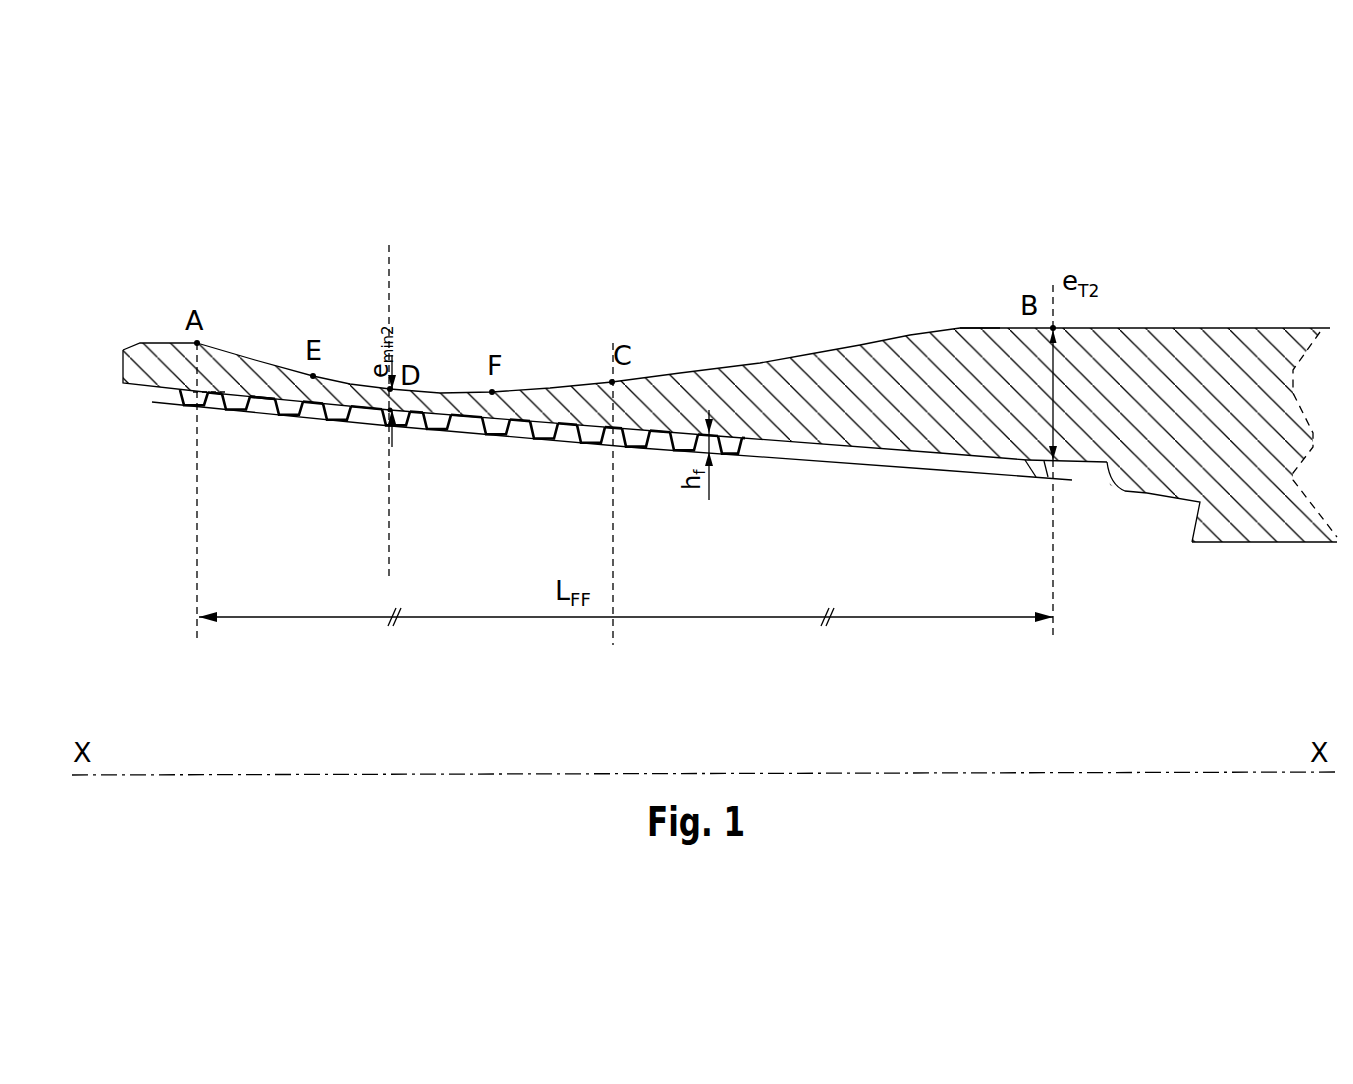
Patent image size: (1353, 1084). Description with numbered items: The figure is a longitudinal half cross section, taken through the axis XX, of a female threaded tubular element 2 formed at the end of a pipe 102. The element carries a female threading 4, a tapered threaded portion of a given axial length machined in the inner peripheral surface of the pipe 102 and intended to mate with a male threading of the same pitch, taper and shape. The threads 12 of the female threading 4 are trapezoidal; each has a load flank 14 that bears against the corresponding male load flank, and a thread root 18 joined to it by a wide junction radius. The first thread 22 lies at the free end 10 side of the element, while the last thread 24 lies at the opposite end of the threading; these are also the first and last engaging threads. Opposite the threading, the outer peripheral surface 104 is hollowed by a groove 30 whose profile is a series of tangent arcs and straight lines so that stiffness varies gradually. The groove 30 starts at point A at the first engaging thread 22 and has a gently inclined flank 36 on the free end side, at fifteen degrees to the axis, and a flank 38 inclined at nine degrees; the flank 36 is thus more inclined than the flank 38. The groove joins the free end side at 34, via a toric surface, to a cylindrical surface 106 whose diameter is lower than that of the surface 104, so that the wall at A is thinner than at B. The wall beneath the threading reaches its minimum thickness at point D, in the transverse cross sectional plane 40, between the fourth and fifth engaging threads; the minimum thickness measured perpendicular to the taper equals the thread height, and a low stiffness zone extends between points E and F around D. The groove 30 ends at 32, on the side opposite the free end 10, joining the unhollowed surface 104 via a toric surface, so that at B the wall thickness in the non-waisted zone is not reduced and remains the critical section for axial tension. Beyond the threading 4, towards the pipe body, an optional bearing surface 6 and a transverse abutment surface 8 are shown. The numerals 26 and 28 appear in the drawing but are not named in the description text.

The female threaded tubular element 2 is at (730, 376).
The female threading 4 is at (612, 491).
The bearing surface 6 is at (1108, 536).
The transverse abutment surface 8 is at (1162, 565).
The free end 10 is at (143, 333).
The threads 12 is at (580, 491).
The load flank 14 is at (659, 502).
The thread root 18 is at (273, 462).
The first thread 22 is at (209, 454).
The last thread 24 is at (1008, 519).
The tooth 26 is at (313, 462).
The tooth 28 is at (466, 488).
The groove 30 is at (501, 320).
The groove end 32 is at (930, 282).
The free end side junction of groove 34 is at (255, 304).
The flank on free end side 36 is at (332, 323).
The flank 38 is at (736, 301).
The transverse cross sectional plane 40 is at (392, 396).
The pipe 102 is at (1264, 378).
The outer peripheral surface 104 is at (1145, 271).
The cylindrical surface 106 is at (160, 287).